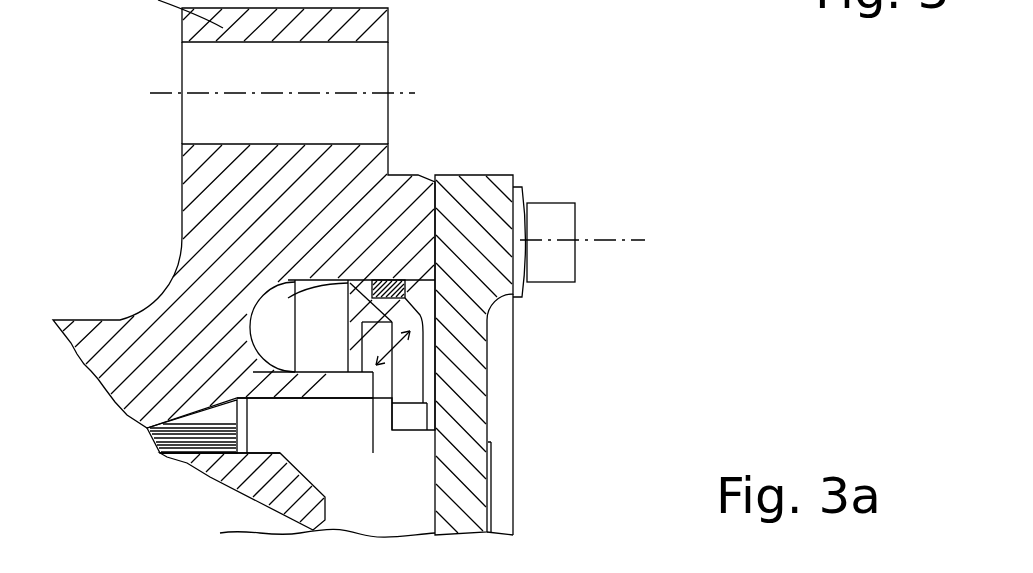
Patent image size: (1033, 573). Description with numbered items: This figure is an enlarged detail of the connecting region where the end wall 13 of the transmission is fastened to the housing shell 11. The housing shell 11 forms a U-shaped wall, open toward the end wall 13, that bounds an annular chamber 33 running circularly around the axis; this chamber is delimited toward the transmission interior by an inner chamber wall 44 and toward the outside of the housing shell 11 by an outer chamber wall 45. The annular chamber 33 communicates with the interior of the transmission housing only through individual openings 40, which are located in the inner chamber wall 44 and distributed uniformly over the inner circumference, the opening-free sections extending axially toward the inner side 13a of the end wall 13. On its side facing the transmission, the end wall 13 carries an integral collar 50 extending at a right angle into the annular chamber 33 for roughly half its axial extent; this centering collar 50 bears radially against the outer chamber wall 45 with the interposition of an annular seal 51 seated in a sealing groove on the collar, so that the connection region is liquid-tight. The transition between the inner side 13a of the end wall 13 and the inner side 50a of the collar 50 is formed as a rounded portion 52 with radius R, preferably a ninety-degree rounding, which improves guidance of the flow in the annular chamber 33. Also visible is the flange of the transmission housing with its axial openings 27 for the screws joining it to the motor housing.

The housing shell 11 is at (120, 377).
The axial openings 27 is at (215, 63).
The outer chamber wall 45 is at (288, 298).
The collar 50 is at (360, 288).
The inner side of the collar 50a is at (305, 338).
The seal 51 is at (392, 287).
The openings 40 is at (413, 390).
The inner chamber wall 44 is at (377, 327).
The annular chamber 33 is at (145, 430).
The inner side of the end wall 13a is at (437, 447).
The end wall 13 is at (460, 487).
The rounded portion 52 is at (428, 326).